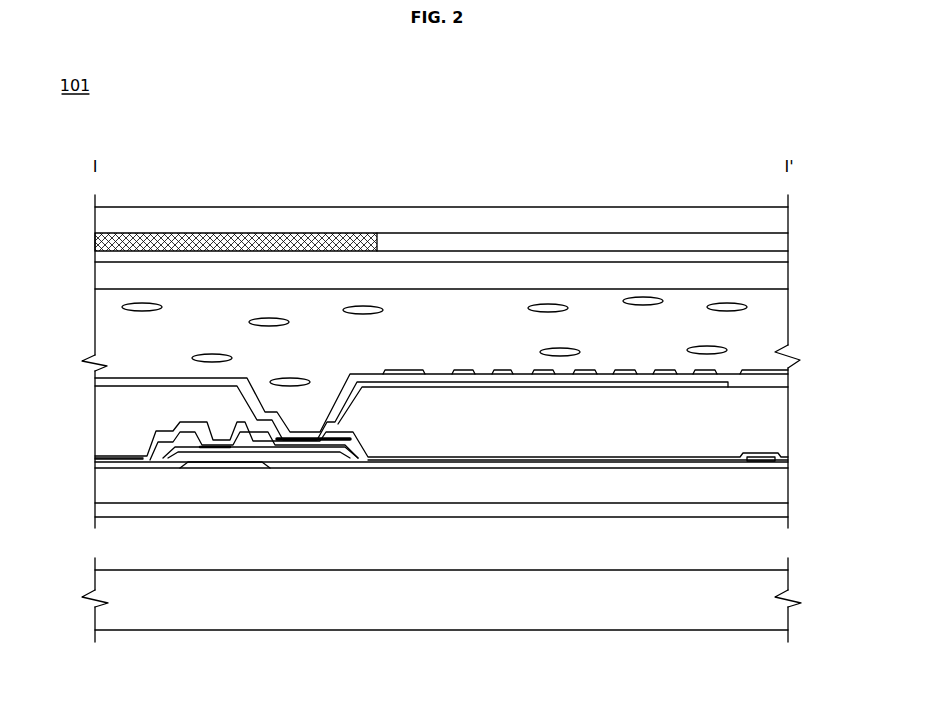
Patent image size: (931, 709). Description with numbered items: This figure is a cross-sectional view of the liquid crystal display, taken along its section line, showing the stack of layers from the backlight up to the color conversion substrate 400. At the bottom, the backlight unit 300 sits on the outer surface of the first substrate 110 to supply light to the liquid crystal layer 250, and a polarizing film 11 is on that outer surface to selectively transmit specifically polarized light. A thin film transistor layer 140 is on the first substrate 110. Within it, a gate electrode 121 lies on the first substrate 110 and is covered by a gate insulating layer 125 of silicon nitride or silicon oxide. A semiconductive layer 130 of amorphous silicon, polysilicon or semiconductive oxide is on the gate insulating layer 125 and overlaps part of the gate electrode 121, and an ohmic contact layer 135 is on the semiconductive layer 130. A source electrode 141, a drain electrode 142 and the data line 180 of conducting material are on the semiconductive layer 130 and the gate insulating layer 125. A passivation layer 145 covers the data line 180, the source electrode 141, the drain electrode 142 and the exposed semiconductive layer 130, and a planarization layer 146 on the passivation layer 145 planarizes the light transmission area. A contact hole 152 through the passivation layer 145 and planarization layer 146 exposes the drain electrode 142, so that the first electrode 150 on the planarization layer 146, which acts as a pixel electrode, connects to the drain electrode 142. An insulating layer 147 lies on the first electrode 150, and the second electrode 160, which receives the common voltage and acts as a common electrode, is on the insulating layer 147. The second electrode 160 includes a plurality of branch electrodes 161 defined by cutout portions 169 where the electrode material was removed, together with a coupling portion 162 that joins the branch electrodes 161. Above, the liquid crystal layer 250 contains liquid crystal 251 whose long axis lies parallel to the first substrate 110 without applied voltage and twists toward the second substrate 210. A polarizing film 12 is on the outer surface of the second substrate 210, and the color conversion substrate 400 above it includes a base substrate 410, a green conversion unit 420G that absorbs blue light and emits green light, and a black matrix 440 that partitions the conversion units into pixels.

The color conversion substrate 400 is at (546, 153).
The black matrix 440 is at (210, 233).
The base substrate 410 is at (377, 233).
The green conversion unit 420G is at (536, 245).
The polarizing film 12 is at (105, 253).
The second substrate 210 is at (105, 276).
The liquid crystal layer 250 is at (105, 333).
The liquid crystal 251 is at (643, 298).
The insulating layer 147 is at (100, 378).
The planarization layer 146 is at (103, 404).
The passivation layer 145 is at (148, 432).
The data line 180 is at (760, 461).
The thin film transistor layer 140 is at (792, 387).
The source electrode 141 is at (180, 432).
The semiconductive layer 130 is at (340, 446).
The contact hole 152 is at (300, 440).
The drain electrode 142 is at (288, 448).
The gate insulating layer 125 is at (245, 453).
The gate electrode 121 is at (200, 463).
The ohmic contact layer 135 is at (166, 458).
The first substrate 110 is at (103, 485).
The polarizing film 11 is at (103, 507).
The backlight unit 300 is at (456, 600).
The first electrode 150 is at (600, 388).
The second electrode 160 is at (503, 323).
The coupling portion 162 is at (405, 371).
The branch electrodes 161 is at (465, 373).
The cutout portions 169 is at (646, 366).